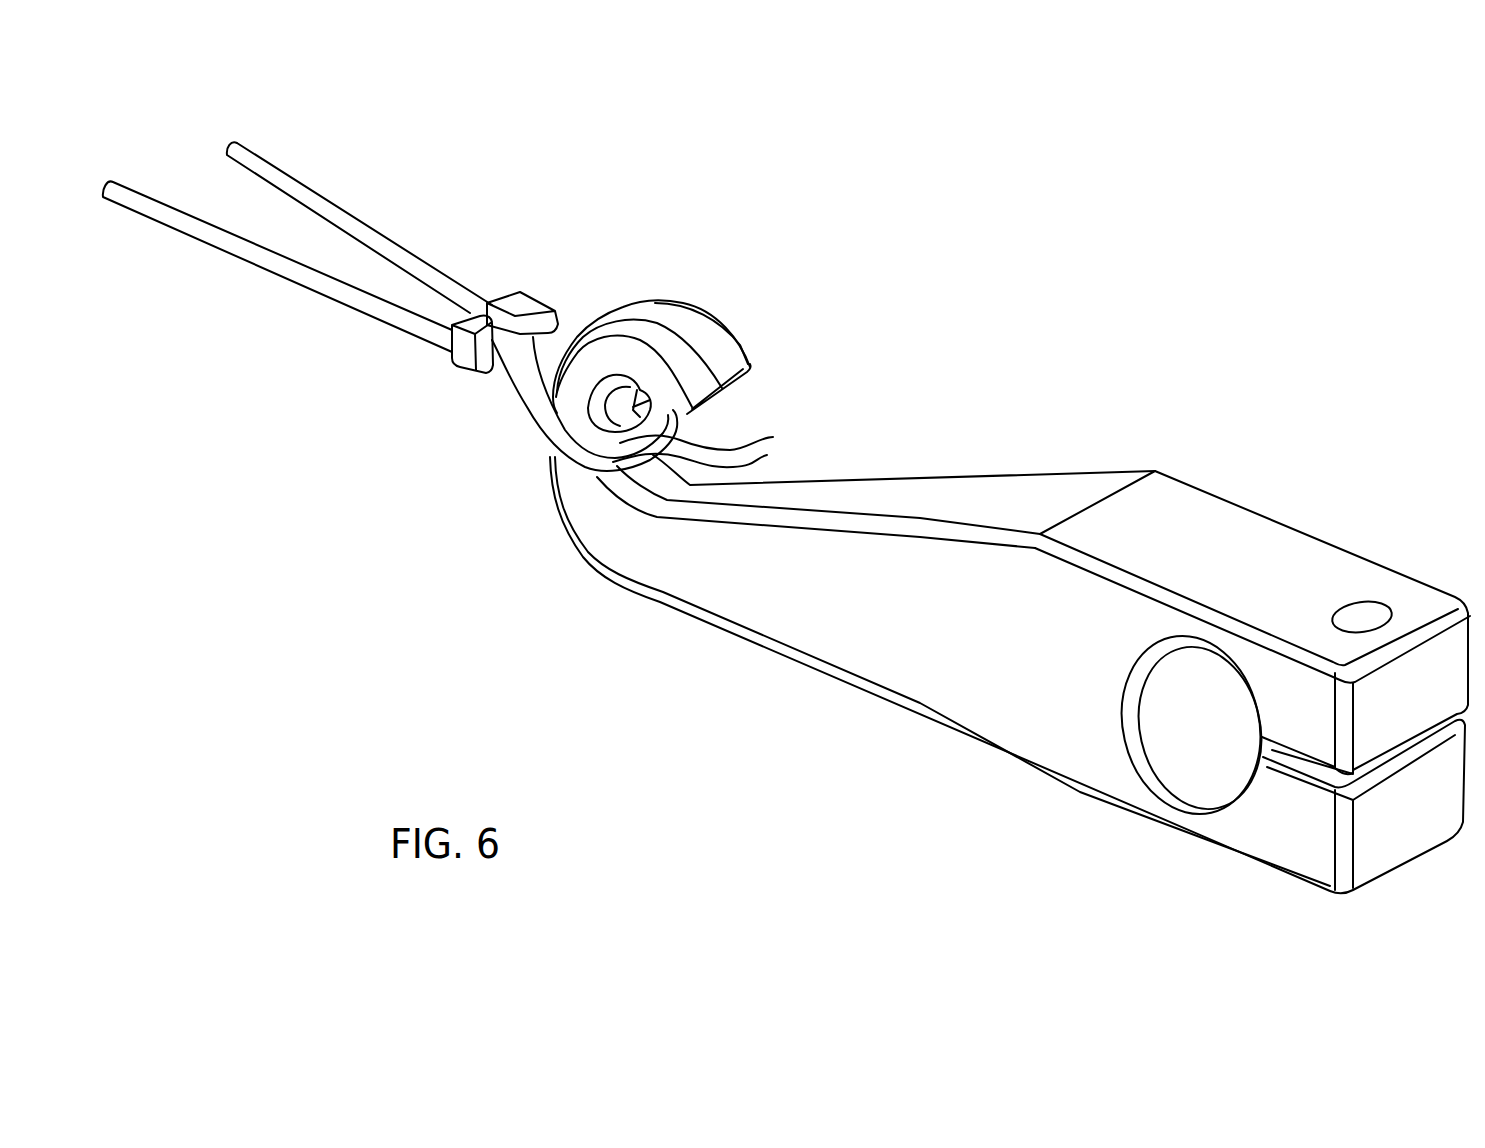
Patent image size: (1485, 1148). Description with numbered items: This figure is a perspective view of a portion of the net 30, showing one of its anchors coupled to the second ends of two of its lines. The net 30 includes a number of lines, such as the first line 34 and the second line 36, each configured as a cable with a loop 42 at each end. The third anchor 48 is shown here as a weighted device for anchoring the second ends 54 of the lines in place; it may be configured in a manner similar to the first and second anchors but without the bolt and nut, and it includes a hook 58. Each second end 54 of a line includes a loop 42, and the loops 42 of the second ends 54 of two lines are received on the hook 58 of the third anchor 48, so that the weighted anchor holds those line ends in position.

The net 30 is at (1107, 148).
The first line 34 is at (313, 200).
The second line 36 is at (218, 237).
The loop 42 is at (753, 450).
The third anchor 48 is at (1337, 453).
The second end 54 is at (500, 365).
The hook 58 is at (710, 345).